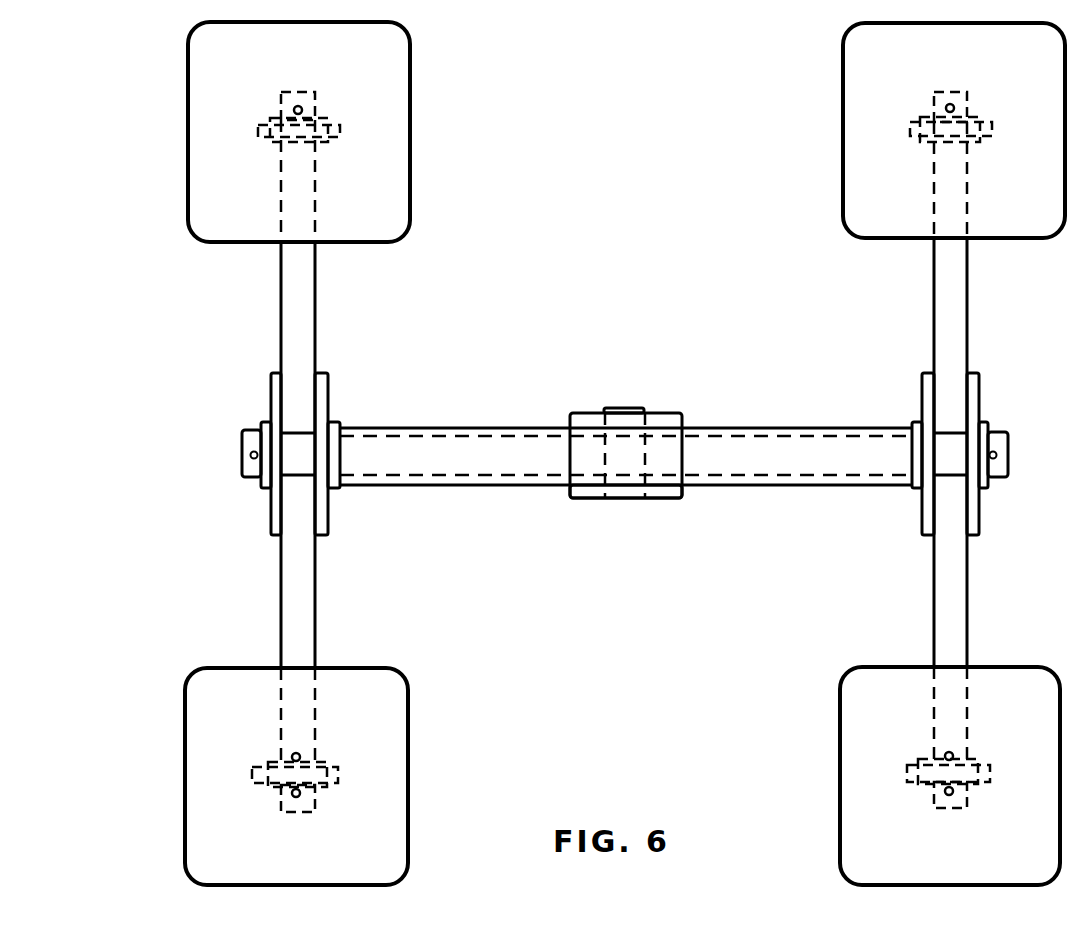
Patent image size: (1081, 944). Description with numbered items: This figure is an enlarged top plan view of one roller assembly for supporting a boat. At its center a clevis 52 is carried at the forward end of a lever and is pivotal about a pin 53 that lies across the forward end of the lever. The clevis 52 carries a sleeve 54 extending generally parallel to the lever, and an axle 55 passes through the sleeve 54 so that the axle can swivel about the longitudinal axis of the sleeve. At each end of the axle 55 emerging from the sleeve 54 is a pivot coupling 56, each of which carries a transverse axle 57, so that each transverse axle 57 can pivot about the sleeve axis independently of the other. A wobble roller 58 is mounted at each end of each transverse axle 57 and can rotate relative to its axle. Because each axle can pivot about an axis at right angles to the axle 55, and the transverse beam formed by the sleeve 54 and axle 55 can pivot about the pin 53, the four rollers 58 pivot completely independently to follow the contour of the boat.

The clevis 52 is at (668, 410).
The pin 53 is at (620, 497).
The sleeve 54 is at (465, 426).
The axle 55 is at (250, 440).
The pivot coupling 56 is at (325, 415).
The transverse axle 57 is at (302, 333).
The wobble roller 58 is at (392, 183).